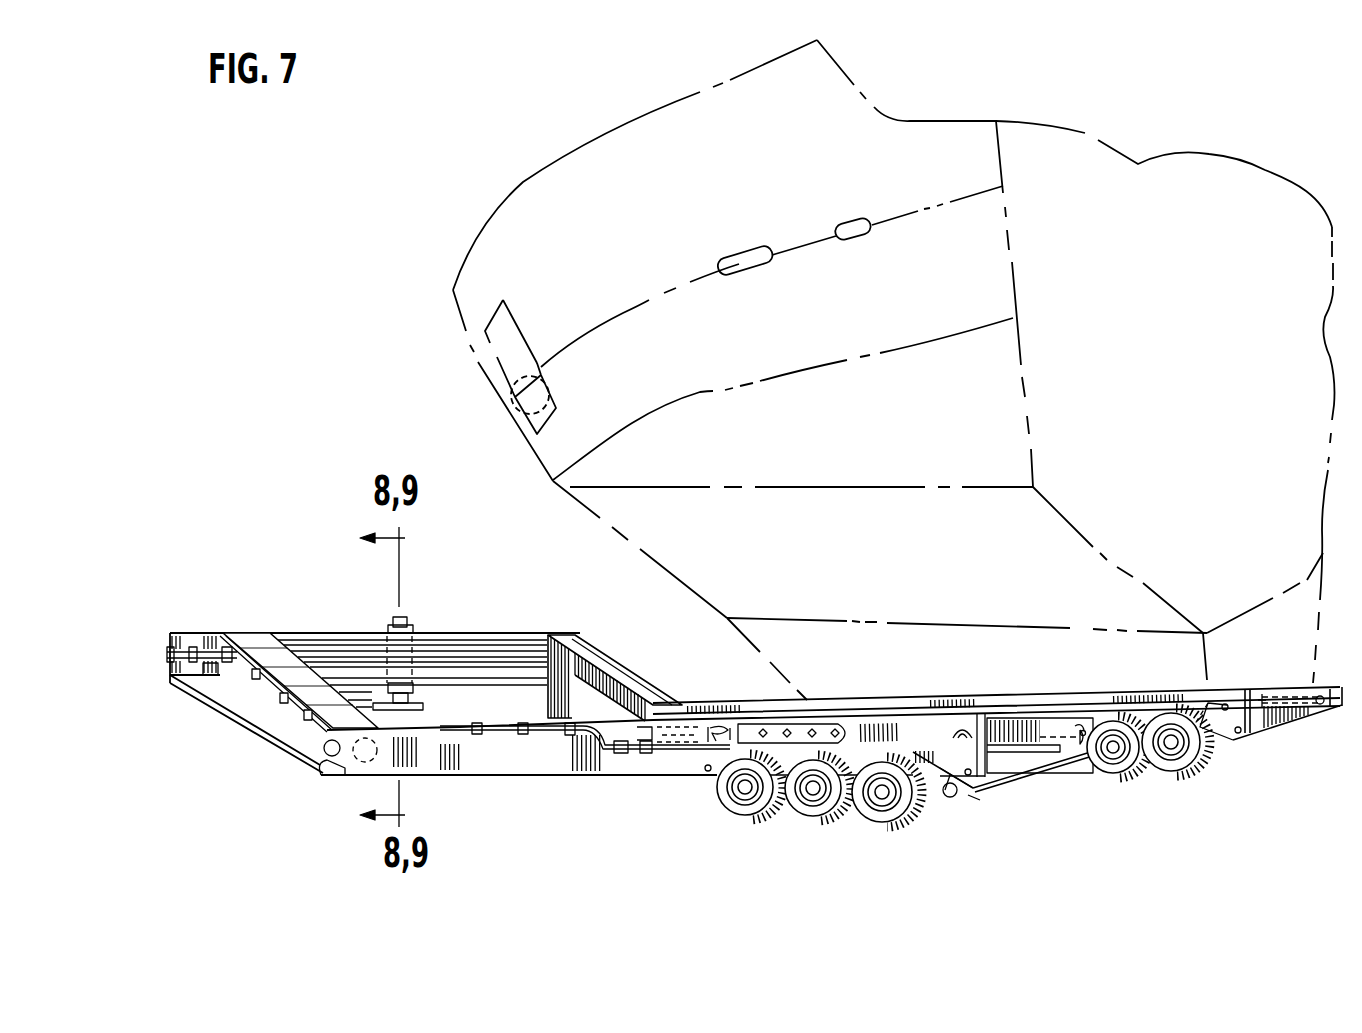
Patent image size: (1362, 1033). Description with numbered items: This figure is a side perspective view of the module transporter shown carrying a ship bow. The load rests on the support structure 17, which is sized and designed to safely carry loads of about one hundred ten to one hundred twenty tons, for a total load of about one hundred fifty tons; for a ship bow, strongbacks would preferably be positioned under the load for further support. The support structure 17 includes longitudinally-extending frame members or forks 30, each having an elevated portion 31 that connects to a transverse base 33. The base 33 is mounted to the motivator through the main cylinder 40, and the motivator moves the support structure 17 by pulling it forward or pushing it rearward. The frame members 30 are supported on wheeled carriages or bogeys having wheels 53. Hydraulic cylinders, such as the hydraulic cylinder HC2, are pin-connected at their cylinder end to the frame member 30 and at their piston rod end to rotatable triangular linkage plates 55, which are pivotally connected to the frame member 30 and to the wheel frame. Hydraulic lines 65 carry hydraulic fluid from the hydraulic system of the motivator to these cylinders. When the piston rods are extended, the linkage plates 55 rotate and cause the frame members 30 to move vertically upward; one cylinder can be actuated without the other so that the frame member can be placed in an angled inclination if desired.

The support structure 17 is at (214, 612).
The frame member 30 is at (668, 712).
The elevated portion 31 is at (570, 663).
The transverse base 33 is at (457, 650).
The main cylinder 40 is at (371, 620).
The wheel 53 is at (1180, 758).
The triangular linkage plate 55 is at (957, 797).
The hydraulic line 65 is at (613, 747).
The hydraulic cylinder HC2 is at (1047, 737).